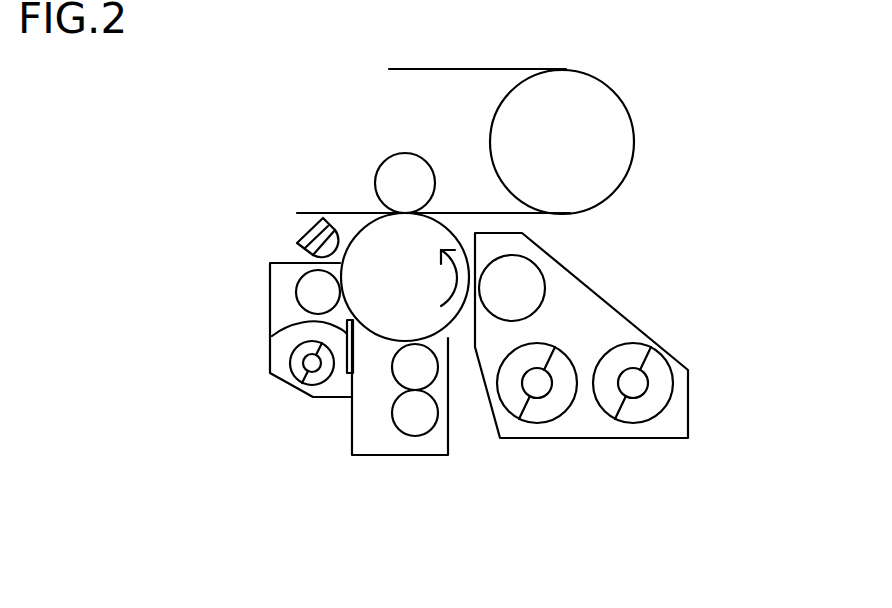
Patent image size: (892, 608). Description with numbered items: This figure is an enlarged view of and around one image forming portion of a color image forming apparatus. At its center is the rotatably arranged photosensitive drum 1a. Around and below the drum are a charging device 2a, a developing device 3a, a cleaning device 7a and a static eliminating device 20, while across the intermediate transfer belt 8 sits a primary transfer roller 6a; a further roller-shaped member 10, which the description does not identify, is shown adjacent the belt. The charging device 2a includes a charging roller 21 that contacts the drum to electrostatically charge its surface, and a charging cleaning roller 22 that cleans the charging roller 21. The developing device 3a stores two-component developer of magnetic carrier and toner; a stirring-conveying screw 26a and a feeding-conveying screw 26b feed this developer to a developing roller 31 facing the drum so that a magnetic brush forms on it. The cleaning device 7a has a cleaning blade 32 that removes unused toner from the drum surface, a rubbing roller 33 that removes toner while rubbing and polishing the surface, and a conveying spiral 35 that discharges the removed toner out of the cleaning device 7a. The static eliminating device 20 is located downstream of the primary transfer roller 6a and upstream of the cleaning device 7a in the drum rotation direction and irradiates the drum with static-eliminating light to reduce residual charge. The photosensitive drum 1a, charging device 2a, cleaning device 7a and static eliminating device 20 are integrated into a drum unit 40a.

The photosensitive drum 1a is at (370, 226).
The charging device 2a is at (426, 442).
The developing device 3a is at (604, 353).
The primary transfer roller 6a is at (385, 160).
The cleaning device 7a is at (264, 344).
The intermediate transfer belt 8 is at (468, 70).
The belt roller 10 is at (634, 130).
The static eliminating device 20 is at (313, 238).
The charging roller 21 is at (435, 378).
The charging cleaning roller 22 is at (428, 430).
The stirring-conveying screw 26a is at (645, 413).
The feeding-conveying screw 26b is at (553, 415).
The developing roller 31 is at (536, 267).
The cleaning blade 32 is at (275, 338).
The rubbing roller 33 is at (300, 283).
The conveying spiral 35 is at (302, 378).
The drum unit 40a is at (310, 445).